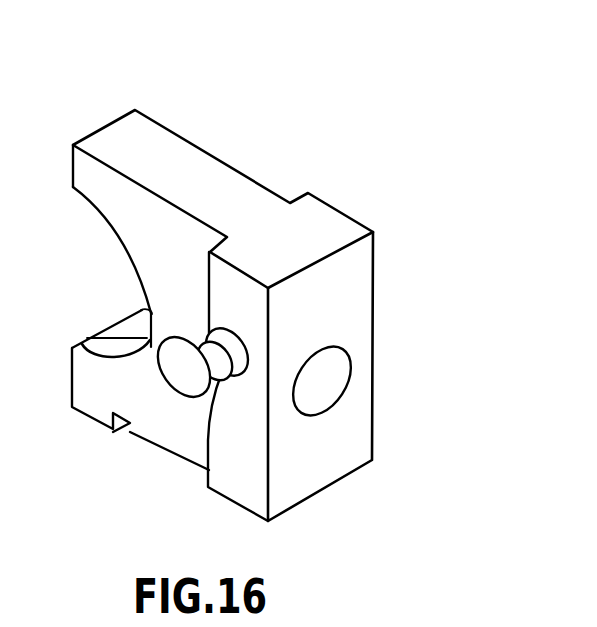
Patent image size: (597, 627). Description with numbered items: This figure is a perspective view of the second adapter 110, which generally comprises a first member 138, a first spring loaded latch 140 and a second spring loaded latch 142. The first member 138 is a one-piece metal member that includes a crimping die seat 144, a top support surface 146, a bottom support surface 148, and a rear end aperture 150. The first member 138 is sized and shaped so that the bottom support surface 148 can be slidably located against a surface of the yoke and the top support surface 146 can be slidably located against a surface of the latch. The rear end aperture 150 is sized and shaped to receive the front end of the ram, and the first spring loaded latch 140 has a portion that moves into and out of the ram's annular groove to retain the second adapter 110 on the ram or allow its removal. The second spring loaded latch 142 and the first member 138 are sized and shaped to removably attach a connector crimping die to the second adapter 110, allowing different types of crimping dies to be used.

The second adapter 110 is at (200, 144).
The first member 138 is at (113, 193).
The first spring loaded latch 140 is at (222, 370).
The second spring loaded latch 142 is at (183, 386).
The crimping die seat 144 is at (113, 338).
The top support surface 146 is at (127, 122).
The bottom support surface 148 is at (84, 402).
The rear end aperture 150 is at (343, 365).